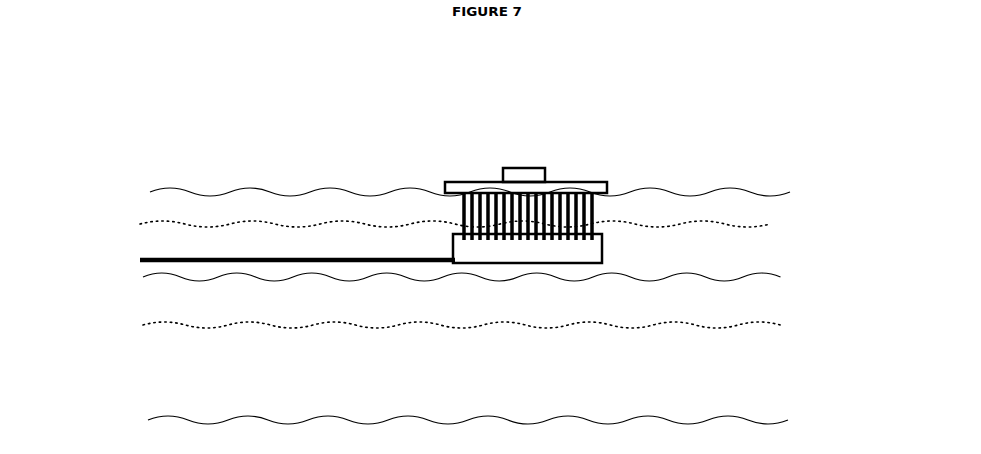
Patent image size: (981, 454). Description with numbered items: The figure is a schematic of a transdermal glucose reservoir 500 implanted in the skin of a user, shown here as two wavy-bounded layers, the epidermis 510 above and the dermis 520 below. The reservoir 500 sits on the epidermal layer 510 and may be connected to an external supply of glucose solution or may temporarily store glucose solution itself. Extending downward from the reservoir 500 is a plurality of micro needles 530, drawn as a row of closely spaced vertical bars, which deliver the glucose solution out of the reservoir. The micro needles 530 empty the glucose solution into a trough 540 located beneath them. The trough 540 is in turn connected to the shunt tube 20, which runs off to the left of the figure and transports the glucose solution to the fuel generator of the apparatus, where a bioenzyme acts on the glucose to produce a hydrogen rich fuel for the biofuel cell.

The shunt tube 20 is at (140, 259).
The transdermal glucose reservoir 500 is at (537, 182).
The epidermis 510 is at (826, 197).
The dermis 520 is at (826, 283).
The micro needles 530 is at (596, 210).
The trough 540 is at (453, 243).